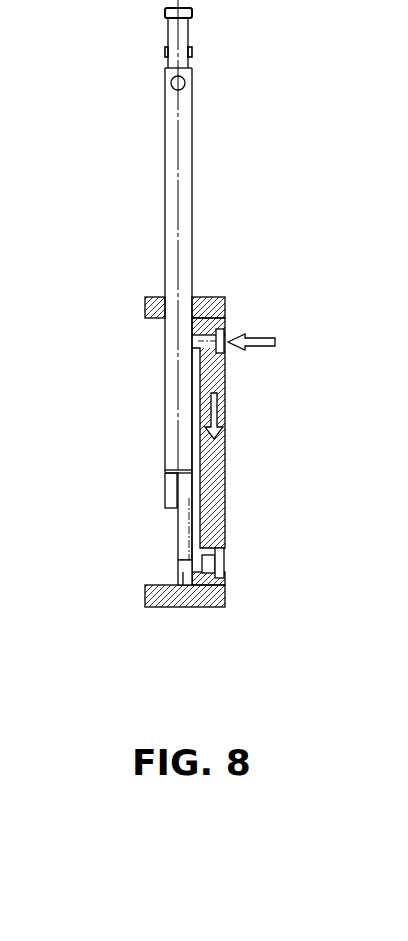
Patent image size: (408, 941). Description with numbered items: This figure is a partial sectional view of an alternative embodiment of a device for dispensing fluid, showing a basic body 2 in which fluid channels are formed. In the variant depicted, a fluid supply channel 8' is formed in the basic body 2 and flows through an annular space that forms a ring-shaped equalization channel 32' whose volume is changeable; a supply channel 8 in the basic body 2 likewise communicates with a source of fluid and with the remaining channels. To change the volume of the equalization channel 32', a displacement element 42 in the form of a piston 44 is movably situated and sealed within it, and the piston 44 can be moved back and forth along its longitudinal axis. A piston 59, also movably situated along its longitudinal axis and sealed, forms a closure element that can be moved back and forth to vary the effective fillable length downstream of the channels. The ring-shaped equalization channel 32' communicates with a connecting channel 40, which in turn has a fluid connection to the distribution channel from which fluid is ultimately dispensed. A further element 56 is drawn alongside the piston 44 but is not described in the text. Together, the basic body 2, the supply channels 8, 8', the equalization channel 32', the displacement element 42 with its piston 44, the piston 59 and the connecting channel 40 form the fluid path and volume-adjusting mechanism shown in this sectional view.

The displacement element 42 is at (112, 152).
The piston 59 is at (165, 168).
The equalization channel 32' is at (133, 385).
The basic body 2 is at (210, 297).
The fluid supply channel 8' is at (254, 328).
The supply channel 8 is at (236, 570).
The piston 44 is at (171, 465).
The collar 56 is at (165, 490).
The connecting channel 40 is at (183, 572).